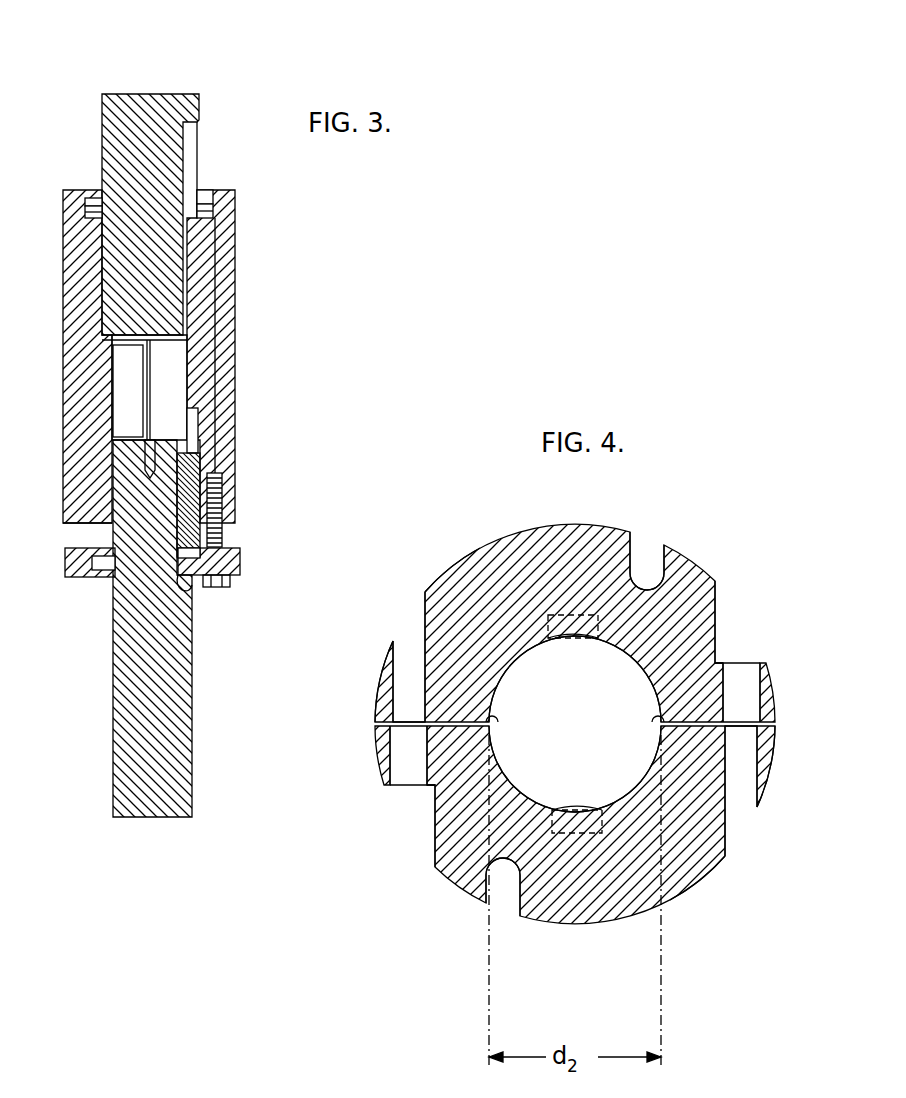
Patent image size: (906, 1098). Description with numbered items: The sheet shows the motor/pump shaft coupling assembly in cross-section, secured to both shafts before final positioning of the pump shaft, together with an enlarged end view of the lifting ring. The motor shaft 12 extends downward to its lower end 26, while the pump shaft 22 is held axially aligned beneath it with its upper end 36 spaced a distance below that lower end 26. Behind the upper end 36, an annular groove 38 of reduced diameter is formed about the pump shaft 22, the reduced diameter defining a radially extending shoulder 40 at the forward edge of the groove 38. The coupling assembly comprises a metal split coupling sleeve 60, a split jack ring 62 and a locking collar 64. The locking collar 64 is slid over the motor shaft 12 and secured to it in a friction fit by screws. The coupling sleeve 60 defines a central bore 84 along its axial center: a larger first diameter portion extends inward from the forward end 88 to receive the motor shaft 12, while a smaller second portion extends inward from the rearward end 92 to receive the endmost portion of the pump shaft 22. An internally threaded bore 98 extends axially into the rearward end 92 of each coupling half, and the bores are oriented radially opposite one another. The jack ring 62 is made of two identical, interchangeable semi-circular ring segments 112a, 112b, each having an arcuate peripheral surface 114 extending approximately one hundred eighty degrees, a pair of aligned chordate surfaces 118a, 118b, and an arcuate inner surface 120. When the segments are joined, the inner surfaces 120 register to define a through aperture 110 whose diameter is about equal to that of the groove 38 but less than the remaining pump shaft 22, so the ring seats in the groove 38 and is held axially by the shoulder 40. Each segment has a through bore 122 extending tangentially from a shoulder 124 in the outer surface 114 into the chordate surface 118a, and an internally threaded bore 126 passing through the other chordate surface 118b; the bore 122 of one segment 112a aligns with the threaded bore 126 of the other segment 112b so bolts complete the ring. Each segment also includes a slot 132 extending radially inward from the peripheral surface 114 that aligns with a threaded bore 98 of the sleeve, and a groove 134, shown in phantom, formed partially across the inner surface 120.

In FIG. 3, the motor shaft 12 is at (190, 100).
In FIG. 3, the pump shaft 22 is at (170, 745).
In FIG. 3, the lower end of the motor shaft 26 is at (110, 348).
In FIG. 3, the upper end of the pump shaft 36 is at (142, 444).
In FIG. 3, the annular groove 38 is at (194, 592).
In FIG. 3, the shoulder 40 is at (90, 544).
In FIG. 3, the coupling sleeve 60 is at (236, 224).
In FIG. 3, the jack ring 62 is at (242, 558).
In FIG. 4, the jack ring 62 is at (700, 528).
In FIG. 3, the locking collar 64 is at (92, 198).
In FIG. 3, the central bore 84 is at (122, 390).
In FIG. 3, the forward end of the coupling sleeve 88 is at (220, 190).
In FIG. 3, the rearward end of the coupling sleeve 92 is at (90, 526).
In FIG. 3, the internally threaded bore 98 is at (222, 478).
In FIG. 4, the through aperture 110 is at (595, 726).
In FIG. 4, the semi-circular ring segment 112a is at (495, 560).
In FIG. 4, the semi-circular ring segment 112b is at (588, 910).
In FIG. 4, the arcuate peripheral surface 114 is at (446, 572).
In FIG. 4, the chordate surface 118a is at (494, 727).
In FIG. 4, the chordate surface 118b is at (656, 727).
In FIG. 4, the arcuate inner surface 120 is at (545, 640).
In FIG. 4, the through bore 122 is at (740, 676).
In FIG. 4, the shoulder 124 is at (720, 640).
In FIG. 4, the internally threaded bore 126 is at (410, 622).
In FIG. 4, the slot 132 is at (644, 552).
In FIG. 4, the groove 134 is at (588, 638).